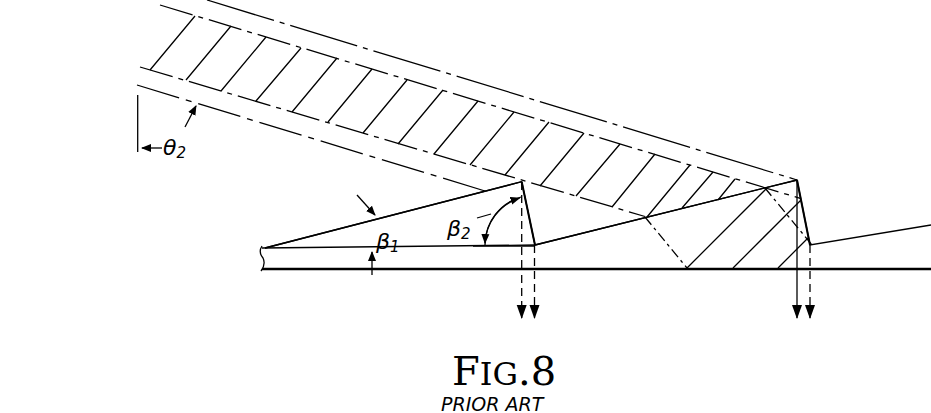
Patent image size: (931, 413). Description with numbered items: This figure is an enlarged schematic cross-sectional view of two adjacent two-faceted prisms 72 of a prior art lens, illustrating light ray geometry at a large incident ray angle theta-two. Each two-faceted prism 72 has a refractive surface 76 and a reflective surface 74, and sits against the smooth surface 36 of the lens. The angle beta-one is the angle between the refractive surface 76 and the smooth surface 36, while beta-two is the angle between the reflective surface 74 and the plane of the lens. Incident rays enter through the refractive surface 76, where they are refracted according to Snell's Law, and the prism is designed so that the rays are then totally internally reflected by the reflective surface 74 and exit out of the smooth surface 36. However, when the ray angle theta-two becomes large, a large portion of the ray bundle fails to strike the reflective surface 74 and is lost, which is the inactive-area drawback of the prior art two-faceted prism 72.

The smooth surface 36 is at (345, 270).
The two-faceted prism 72 is at (437, 250).
The reflective surface 74 is at (527, 204).
The refractive surface 76 is at (323, 234).